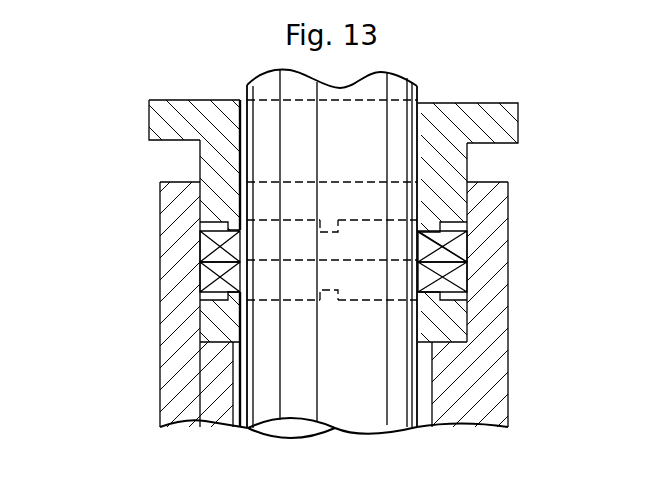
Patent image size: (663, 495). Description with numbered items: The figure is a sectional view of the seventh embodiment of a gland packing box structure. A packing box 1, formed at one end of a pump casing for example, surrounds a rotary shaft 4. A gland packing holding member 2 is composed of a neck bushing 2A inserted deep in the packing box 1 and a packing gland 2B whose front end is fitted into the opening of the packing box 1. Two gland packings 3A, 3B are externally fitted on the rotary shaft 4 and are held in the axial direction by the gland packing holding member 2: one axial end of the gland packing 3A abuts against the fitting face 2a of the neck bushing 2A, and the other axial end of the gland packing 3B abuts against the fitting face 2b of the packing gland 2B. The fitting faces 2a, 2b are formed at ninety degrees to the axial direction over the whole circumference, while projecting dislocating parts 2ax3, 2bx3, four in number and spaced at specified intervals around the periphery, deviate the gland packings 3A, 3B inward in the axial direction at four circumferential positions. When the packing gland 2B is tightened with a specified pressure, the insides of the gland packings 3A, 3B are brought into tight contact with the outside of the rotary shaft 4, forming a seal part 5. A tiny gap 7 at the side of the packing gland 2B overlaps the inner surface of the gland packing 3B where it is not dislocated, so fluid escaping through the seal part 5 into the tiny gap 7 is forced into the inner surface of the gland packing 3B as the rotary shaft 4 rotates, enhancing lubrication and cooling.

The packing box 1 is at (503, 352).
The gland packing holding member 2 is at (51, 232).
The neck bushing 2A is at (200, 332).
The packing gland 2B is at (149, 138).
The fitting face 2a is at (285, 306).
The fitting face 2b is at (285, 218).
The projecting dislocating part 2ax3 is at (337, 306).
The projecting dislocating part 2bx3 is at (337, 222).
The gland packing 3A is at (458, 278).
The gland packing 3B is at (458, 248).
The rotary shaft 4 is at (400, 418).
The seal part 5 is at (442, 244).
The tiny gap 7 is at (240, 98).